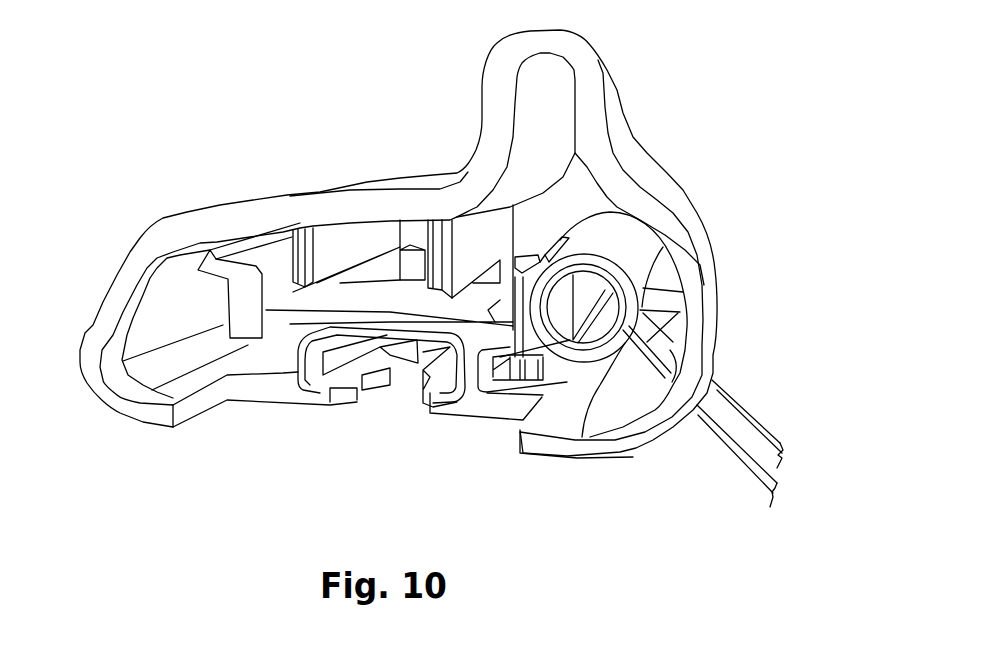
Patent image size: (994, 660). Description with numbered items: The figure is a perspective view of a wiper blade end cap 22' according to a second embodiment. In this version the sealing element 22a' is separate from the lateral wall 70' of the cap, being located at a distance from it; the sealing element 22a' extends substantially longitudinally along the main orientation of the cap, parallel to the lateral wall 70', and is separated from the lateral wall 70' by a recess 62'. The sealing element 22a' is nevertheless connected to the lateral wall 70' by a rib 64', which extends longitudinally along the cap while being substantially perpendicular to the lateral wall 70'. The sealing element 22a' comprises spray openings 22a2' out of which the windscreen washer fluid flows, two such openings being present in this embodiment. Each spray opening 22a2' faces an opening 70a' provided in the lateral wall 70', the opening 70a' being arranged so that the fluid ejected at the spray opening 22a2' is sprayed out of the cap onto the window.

The lateral wall 70' is at (436, 243).
The end cap 22' is at (408, 223).
The sealing element 22a' is at (524, 374).
The spray opening 22a2' is at (531, 458).
The recess 62' is at (623, 366).
The rib 64' is at (658, 308).
The opening 70a' is at (752, 442).